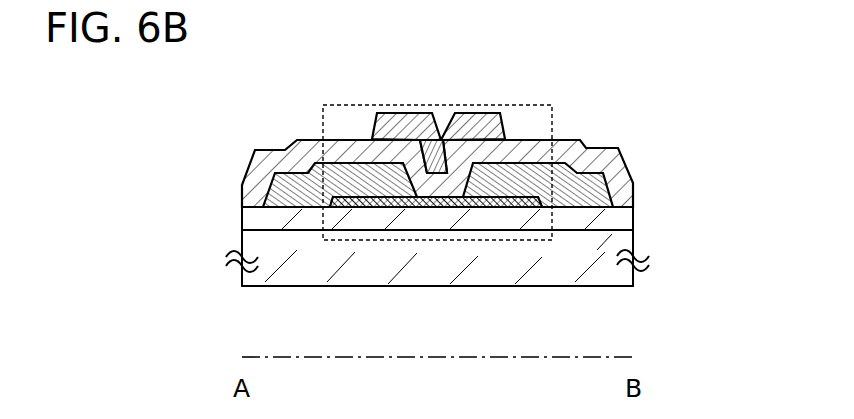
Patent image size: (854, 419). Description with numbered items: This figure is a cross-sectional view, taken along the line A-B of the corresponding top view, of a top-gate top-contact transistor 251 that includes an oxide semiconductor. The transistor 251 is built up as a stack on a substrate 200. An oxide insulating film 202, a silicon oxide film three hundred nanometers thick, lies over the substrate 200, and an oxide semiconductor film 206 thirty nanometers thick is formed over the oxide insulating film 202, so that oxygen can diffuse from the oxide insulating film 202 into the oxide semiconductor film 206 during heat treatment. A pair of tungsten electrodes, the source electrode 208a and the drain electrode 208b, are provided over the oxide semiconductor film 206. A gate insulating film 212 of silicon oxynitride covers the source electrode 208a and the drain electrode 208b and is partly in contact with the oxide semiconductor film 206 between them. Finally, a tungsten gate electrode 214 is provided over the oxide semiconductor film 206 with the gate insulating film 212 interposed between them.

The substrate 200 is at (297, 277).
The oxide insulating film 202 is at (399, 208).
The oxide semiconductor film 206 is at (479, 208).
The source electrode 208a is at (298, 186).
The drain electrode 208b is at (587, 178).
The gate insulating film 212 is at (567, 140).
The gate electrode 214 is at (452, 112).
The transistor 251 is at (553, 239).